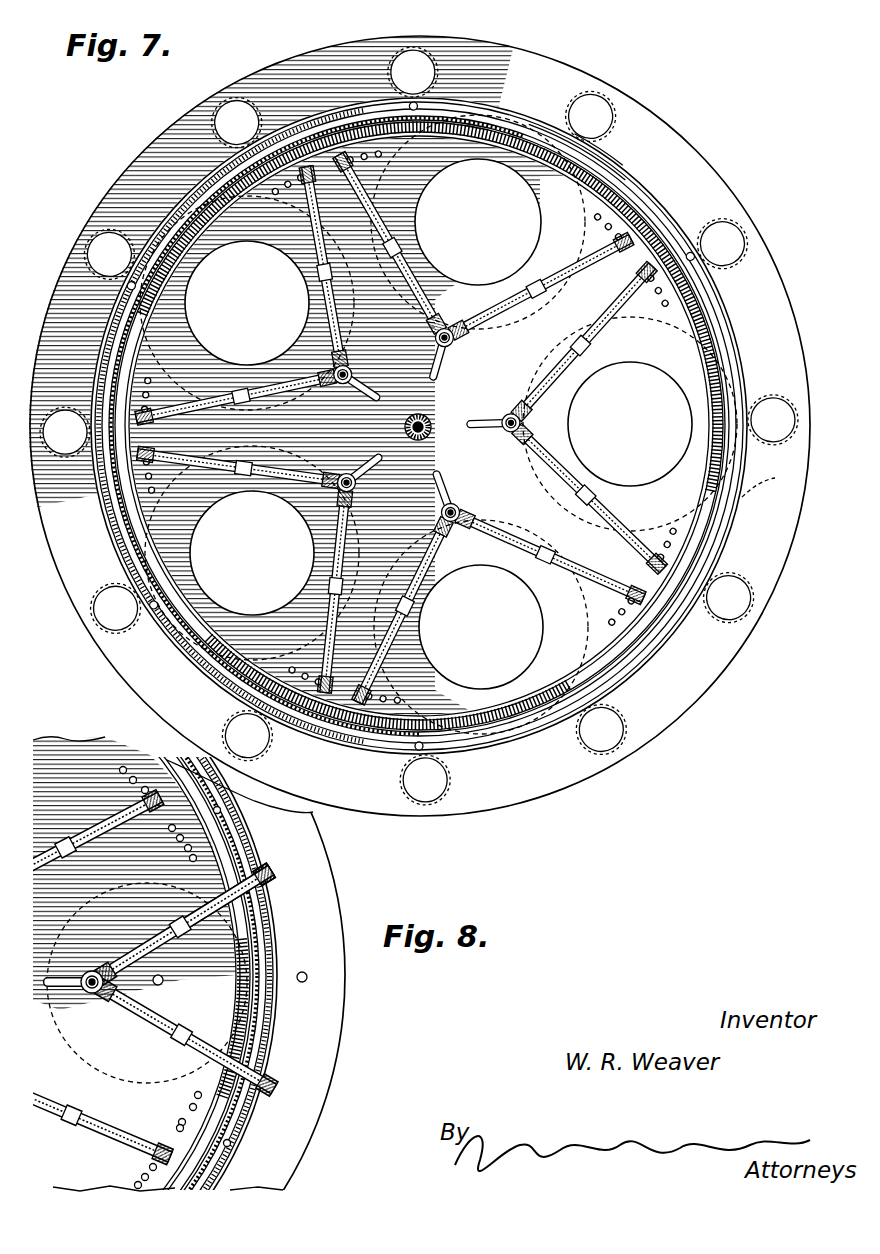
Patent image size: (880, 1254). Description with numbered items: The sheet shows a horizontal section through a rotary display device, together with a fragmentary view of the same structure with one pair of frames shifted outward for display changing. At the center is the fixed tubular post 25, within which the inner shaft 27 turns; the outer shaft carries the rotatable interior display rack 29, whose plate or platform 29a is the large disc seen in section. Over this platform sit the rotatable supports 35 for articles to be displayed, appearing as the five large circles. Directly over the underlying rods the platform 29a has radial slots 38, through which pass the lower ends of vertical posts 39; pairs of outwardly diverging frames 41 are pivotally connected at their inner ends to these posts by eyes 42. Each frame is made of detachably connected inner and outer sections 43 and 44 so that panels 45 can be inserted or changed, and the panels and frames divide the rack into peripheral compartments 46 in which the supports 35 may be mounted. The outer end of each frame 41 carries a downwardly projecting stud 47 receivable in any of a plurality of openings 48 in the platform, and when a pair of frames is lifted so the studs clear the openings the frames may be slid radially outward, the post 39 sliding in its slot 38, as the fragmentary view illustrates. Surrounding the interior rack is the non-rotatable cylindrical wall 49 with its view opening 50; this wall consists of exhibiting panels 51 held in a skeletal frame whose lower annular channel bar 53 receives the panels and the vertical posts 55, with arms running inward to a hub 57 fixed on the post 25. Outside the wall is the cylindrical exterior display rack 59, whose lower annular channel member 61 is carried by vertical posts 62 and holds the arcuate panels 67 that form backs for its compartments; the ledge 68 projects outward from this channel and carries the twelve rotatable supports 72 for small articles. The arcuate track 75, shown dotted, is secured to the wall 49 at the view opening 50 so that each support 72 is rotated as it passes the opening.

In FIG. 7, the tubular post 25 is at (430, 421).
In FIG. 7, the inner shaft 27 is at (428, 434).
In FIG. 7, the interior display rack 29 is at (441, 117).
In FIG. 8, the interior display rack 29 is at (56, 742).
In FIG. 7, the plate or platform 29a is at (622, 668).
In FIG. 8, the plate or platform 29a is at (236, 996).
In FIG. 7, the rotatable supports 35 is at (438, 424).
In FIG. 7, the radial slots 38 is at (443, 370).
In FIG. 8, the radial slots 38 is at (50, 974).
In FIG. 7, the vertical posts 39 is at (379, 391).
In FIG. 8, the vertical posts 39 is at (94, 992).
In FIG. 7, the frames 41 is at (515, 303).
In FIG. 8, the frames 41 is at (152, 925).
In FIG. 7, the eyes 42 is at (452, 342).
In FIG. 8, the eyes 42 is at (92, 974).
In FIG. 7, the inner sections 43 is at (553, 380).
In FIG. 8, the inner sections 43 is at (180, 940).
In FIG. 7, the outer sections 44 is at (611, 316).
In FIG. 8, the outer sections 44 is at (276, 882).
In FIG. 7, the panels 45 is at (548, 287).
In FIG. 8, the panels 45 is at (100, 810).
In FIG. 7, the peripheral compartments 46 is at (474, 122).
In FIG. 8, the stud 47 is at (272, 868).
In FIG. 7, the openings 48 is at (624, 612).
In FIG. 8, the openings 48 is at (190, 845).
In FIG. 7, the cylindrical wall 49 is at (126, 547).
In FIG. 8, the cylindrical wall 49 is at (202, 1172).
In FIG. 7, the view opening 50 is at (706, 321).
In FIG. 8, the view opening 50 is at (226, 848).
In FIG. 7, the exhibiting panels 51 is at (350, 714).
In FIG. 8, the exhibiting panels 51 is at (172, 770).
In FIG. 7, the lower annular channel bar 53 is at (543, 132).
In FIG. 8, the lower annular channel bar 53 is at (242, 1048).
In FIG. 7, the vertical posts 55 is at (414, 106).
In FIG. 8, the vertical posts 55 is at (200, 818).
In FIG. 7, the hub 57 is at (638, 185).
In FIG. 7, the exterior display rack 59 is at (642, 181).
In FIG. 7, the lower annular channel member 61 is at (603, 140).
In FIG. 7, the vertical posts 62 is at (425, 103).
In FIG. 7, the arcuate panels 67 is at (517, 741).
In FIG. 8, the arcuate panels 67 is at (232, 1160).
In FIG. 7, the ledge 68 is at (573, 767).
In FIG. 8, the ledge 68 is at (326, 985).
In FIG. 7, the rotatable supports 72 is at (600, 108).
In FIG. 8, the rotatable supports 72 is at (302, 977).
In FIG. 7, the arcuate track 75 is at (742, 497).